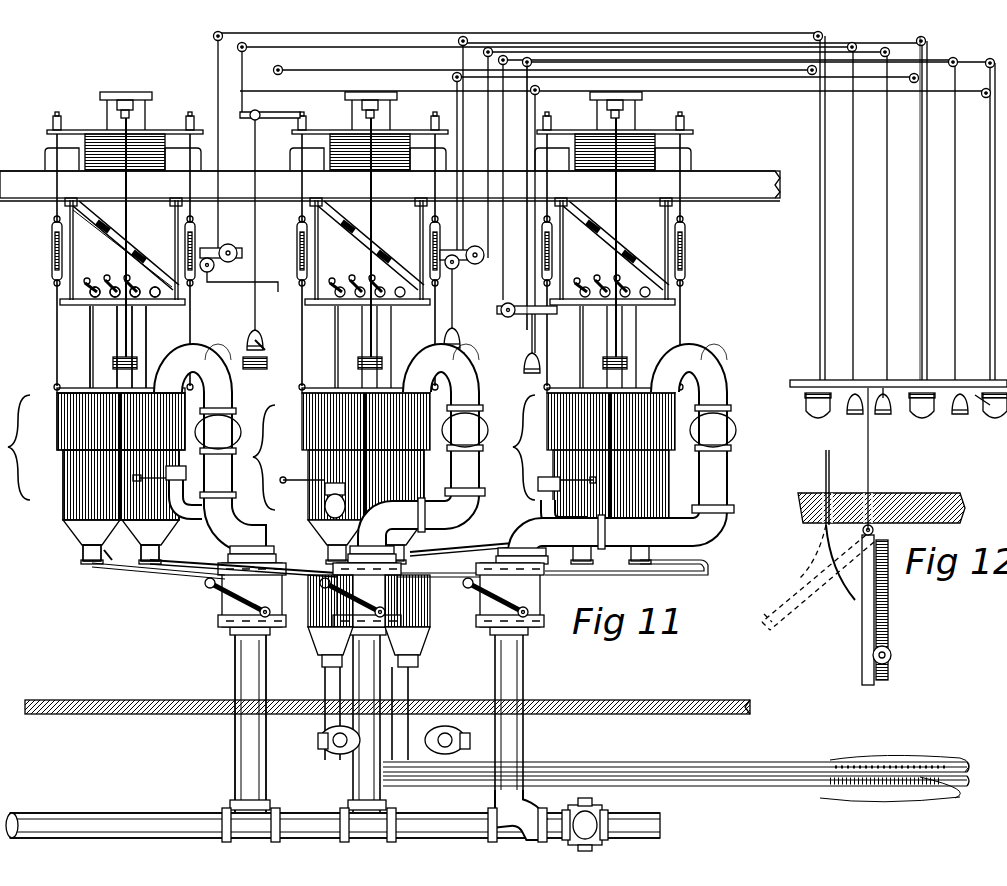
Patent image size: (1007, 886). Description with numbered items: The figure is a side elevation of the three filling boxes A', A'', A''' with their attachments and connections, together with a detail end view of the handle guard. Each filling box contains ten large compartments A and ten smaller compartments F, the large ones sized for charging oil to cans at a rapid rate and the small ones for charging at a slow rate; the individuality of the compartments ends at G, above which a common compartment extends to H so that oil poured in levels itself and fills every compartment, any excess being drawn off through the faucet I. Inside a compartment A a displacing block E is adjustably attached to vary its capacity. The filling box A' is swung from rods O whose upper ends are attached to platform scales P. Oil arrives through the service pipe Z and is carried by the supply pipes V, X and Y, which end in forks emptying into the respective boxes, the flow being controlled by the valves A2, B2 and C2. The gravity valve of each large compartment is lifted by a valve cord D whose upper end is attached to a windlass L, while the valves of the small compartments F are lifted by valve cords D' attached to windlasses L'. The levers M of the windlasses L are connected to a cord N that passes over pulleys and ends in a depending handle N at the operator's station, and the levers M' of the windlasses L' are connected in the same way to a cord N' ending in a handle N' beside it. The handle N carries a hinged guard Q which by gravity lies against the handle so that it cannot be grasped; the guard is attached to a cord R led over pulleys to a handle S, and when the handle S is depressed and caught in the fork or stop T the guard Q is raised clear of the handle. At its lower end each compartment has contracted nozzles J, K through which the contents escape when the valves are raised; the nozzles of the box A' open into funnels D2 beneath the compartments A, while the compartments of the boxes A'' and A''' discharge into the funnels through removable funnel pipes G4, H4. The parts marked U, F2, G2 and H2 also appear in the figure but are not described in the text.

In FIG. 11, the platform scales P is at (74, 130).
In FIG. 11, the rods O is at (54, 280).
In FIG. 11, the windlass levers M is at (367, 293).
In FIG. 11, the windlass levers M' is at (205, 248).
In FIG. 11, the windlasses L is at (364, 293).
In FIG. 11, the windlasses L' is at (366, 287).
In FIG. 11, the valve cord D is at (365, 347).
In FIG. 11, the valve cord D' is at (370, 347).
In FIG. 11, the cord and depending handle N is at (597, 206).
In FIG. 12, the cord and depending handle N is at (908, 534).
In FIG. 11, the cord and handle N' is at (677, 196).
In FIG. 12, the cord and handle N' is at (887, 408).
In FIG. 11, the guard cord R is at (922, 221).
In FIG. 12, the guard cord R is at (824, 466).
In FIG. 11, the handle S is at (463, 334).
In FIG. 11, the fork or stop T is at (462, 360).
In FIG. 11, the compartment A is at (358, 476).
In FIG. 11, the filling box A' is at (258, 457).
In FIG. 11, the filling box A'' is at (15, 447).
In FIG. 11, the filling box A''' is at (512, 447).
In FIG. 11, the upper limit of common compartment H is at (292, 416).
In FIG. 11, the junction of common compartment G is at (60, 451).
In FIG. 11, the smaller compartment F is at (373, 485).
In FIG. 11, the displacing block E is at (394, 485).
In FIG. 11, the filling box supply pipe X is at (224, 384).
In FIG. 11, the valve stem U is at (250, 362).
In FIG. 11, the valve B2 is at (245, 595).
In FIG. 11, the faucet I is at (185, 518).
In FIG. 11, the contracted nozzle J is at (82, 550).
In FIG. 11, the contracted nozzle K is at (115, 548).
In FIG. 11, the removable funnel pipe H4 is at (492, 532).
In FIG. 11, the removable funnel pipe G4 is at (130, 572).
In FIG. 11, the filling box supply pipe V is at (480, 394).
In FIG. 11, the valve A2 is at (360, 595).
In FIG. 11, the funnel D2 is at (316, 626).
In FIG. 11, the pipe F2 is at (335, 677).
In FIG. 11, the pipe G2 is at (700, 762).
In FIG. 11, the elbow H2 is at (318, 745).
In FIG. 11, the filling box supply pipe Y is at (718, 380).
In FIG. 11, the valve C2 is at (503, 595).
In FIG. 11, the oil service pipe Z is at (135, 812).
In FIG. 12, the hinged guard Q is at (920, 432).